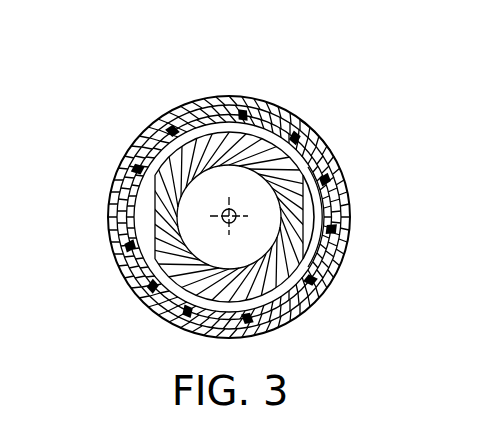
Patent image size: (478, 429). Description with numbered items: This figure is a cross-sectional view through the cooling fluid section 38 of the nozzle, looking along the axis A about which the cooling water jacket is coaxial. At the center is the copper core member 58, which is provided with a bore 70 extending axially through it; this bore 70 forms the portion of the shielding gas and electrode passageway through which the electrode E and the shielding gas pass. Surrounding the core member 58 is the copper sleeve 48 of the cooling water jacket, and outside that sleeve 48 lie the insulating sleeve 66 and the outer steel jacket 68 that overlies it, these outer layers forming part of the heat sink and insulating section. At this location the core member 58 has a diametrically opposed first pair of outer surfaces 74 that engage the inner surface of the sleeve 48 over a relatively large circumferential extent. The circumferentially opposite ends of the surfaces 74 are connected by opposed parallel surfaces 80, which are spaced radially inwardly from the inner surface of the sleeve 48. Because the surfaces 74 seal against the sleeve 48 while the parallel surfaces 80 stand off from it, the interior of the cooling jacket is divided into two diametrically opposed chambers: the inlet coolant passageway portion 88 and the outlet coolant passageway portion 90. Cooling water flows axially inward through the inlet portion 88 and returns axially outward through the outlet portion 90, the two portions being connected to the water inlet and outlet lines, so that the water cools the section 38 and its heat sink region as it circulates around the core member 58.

The cooling fluid section 38 is at (305, 90).
The copper sleeve 48 is at (165, 118).
The insulating sleeve 66 is at (140, 138).
The outer steel jacket 68 is at (128, 162).
The outlet coolant passageway portion 90 is at (127, 207).
The first pair of outer surfaces 74 is at (238, 112).
The opposed parallel surfaces 80 is at (305, 213).
The bore 70 is at (255, 250).
The copper core member 58 is at (308, 193).
The inlet coolant passageway portion 88 is at (318, 237).
The axis A is at (228, 214).
The electrode E is at (319, 129).